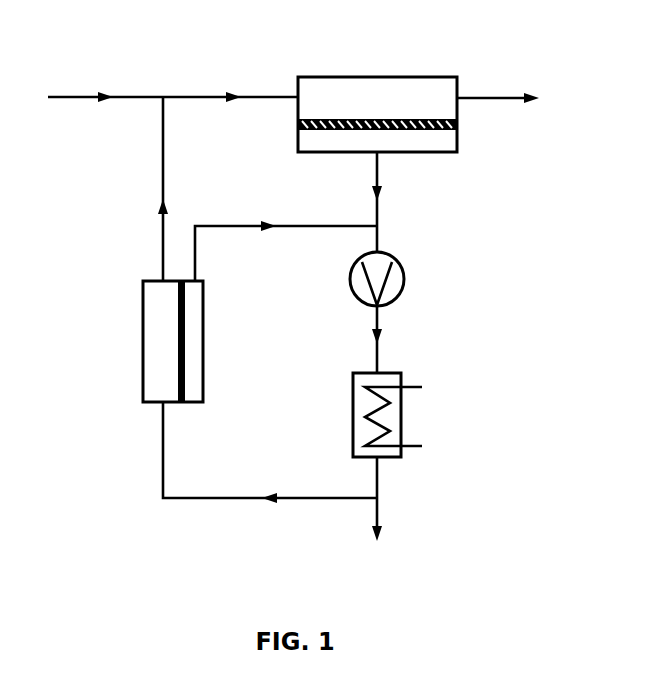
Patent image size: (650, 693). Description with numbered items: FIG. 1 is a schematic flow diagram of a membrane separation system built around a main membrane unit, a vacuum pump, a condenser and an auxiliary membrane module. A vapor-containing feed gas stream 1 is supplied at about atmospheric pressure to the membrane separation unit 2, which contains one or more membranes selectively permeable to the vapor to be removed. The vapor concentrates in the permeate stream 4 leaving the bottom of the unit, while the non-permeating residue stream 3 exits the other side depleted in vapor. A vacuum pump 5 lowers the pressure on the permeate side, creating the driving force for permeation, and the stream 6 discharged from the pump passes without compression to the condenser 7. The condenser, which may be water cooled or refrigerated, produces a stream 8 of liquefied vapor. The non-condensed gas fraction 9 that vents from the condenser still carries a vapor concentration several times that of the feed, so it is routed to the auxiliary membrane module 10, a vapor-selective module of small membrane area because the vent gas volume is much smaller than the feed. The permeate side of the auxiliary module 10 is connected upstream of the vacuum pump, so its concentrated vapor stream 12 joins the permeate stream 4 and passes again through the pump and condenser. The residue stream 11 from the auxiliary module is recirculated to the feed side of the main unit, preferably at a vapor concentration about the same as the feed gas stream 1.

The vapor-containing feed gas stream 1 is at (173, 82).
The membrane separation unit 2 is at (365, 77).
The residue stream 3 is at (511, 98).
The permeate stream 4 is at (391, 202).
The vacuum pump 5 is at (404, 269).
The stream from the vacuum pump 6 is at (362, 339).
The condenser 7 is at (395, 373).
The stream of liquified vapor 8 is at (377, 520).
The non-condensed gas fraction 9 is at (270, 472).
The auxiliary membrane module 10 is at (143, 365).
The residue stream from the auxiliary unit 11 is at (142, 189).
The concentrated vapor stream from the auxiliary module 12 is at (286, 236).